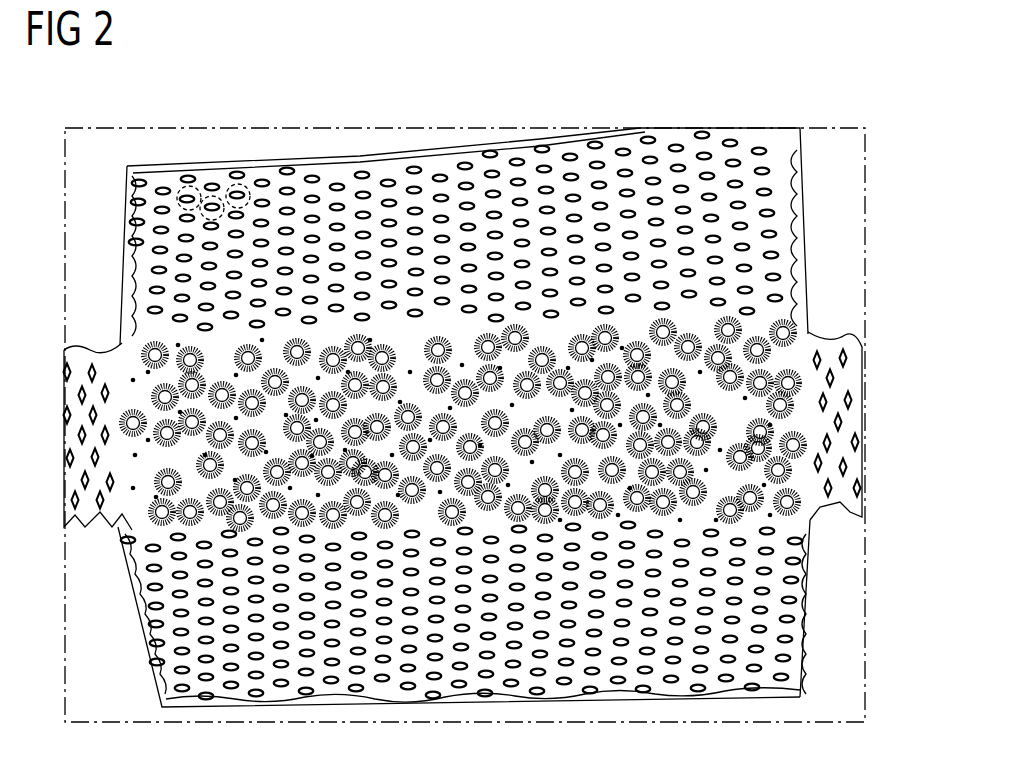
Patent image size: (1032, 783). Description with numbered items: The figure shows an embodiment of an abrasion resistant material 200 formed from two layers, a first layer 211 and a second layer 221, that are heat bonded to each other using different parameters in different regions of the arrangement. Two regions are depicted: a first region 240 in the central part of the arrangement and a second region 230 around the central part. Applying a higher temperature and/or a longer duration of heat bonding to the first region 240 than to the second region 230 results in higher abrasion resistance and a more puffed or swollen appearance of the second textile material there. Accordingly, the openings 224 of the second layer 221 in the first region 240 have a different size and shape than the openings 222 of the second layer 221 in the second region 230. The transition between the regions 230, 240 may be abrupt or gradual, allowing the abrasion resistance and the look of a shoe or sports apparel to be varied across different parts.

The abrasion resistant material 200 is at (99, 143).
The first layer 211 is at (830, 545).
The second layer 221 is at (106, 338).
The openings of the second region 222 is at (240, 184).
The openings of the first region 224 is at (420, 345).
The second region 230 is at (795, 205).
The first region 240 is at (762, 419).